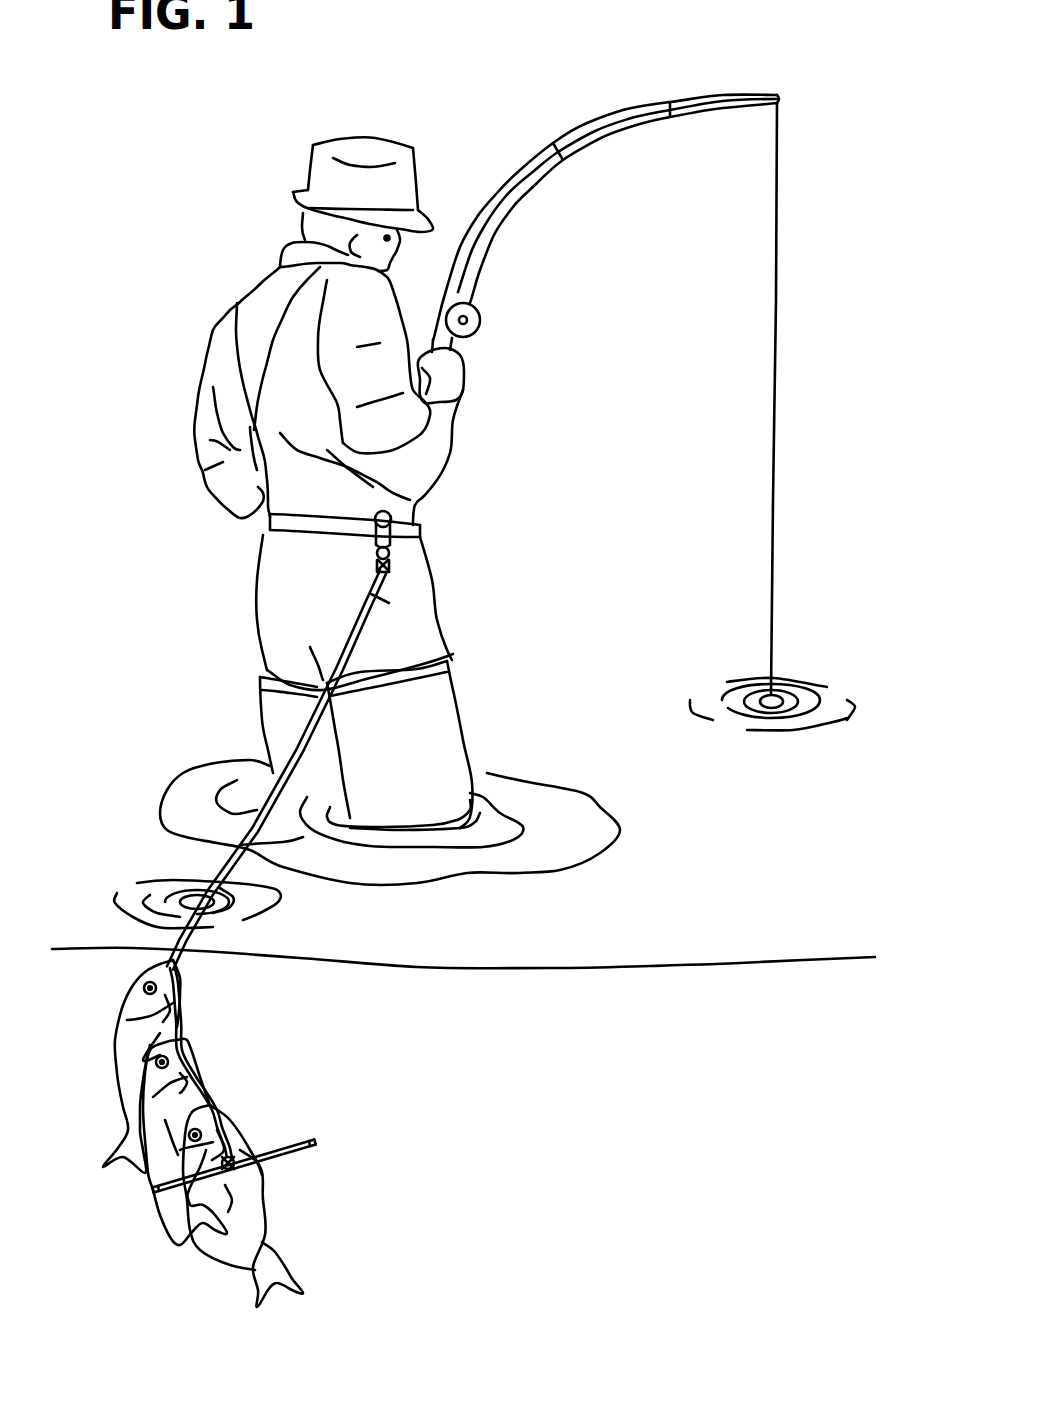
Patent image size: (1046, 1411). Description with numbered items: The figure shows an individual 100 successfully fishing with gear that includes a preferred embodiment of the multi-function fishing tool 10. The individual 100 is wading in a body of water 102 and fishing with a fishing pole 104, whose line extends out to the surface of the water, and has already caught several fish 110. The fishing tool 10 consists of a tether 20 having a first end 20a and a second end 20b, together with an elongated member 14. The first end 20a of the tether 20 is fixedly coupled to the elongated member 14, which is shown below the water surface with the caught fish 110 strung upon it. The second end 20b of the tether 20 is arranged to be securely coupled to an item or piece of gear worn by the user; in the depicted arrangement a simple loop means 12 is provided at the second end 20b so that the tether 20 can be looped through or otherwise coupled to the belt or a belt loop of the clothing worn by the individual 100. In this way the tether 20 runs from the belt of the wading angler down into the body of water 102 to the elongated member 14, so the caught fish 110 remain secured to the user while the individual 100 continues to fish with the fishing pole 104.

The multi-function fishing tool 10 is at (130, 832).
The loop means 12 is at (355, 565).
The elongated member 14 is at (297, 1153).
The tether 20 is at (265, 885).
The first end 20a is at (247, 1133).
The second end 20b is at (390, 580).
The individual 100 is at (214, 284).
The body of water 102 is at (772, 889).
The fishing pole 104 is at (585, 212).
The fish 110 is at (168, 1218).